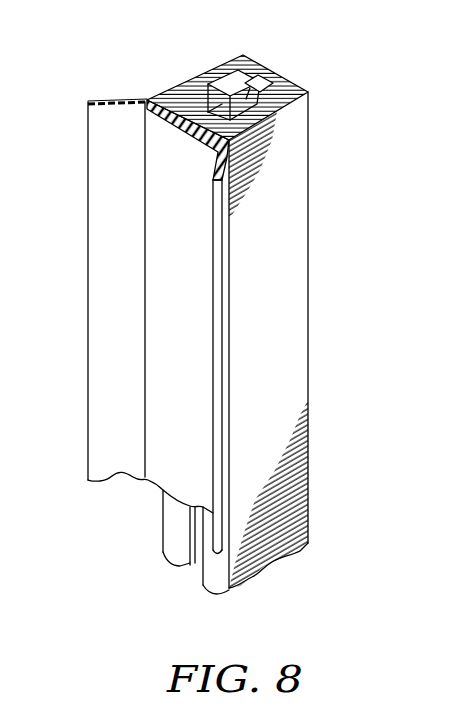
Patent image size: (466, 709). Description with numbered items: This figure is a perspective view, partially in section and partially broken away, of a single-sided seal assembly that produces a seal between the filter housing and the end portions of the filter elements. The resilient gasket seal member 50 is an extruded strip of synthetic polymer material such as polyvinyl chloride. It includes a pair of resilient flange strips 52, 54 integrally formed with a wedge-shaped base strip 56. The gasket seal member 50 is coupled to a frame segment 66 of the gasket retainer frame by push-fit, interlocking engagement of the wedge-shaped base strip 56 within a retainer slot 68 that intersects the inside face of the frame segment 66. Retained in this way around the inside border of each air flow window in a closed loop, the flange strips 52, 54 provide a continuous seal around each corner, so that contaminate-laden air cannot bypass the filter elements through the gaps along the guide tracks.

The resilient gasket seal member 50 is at (76, 165).
The resilient flange strip 52 is at (95, 224).
The resilient flange strip 54 is at (218, 277).
The wedge-shaped base strip 56 is at (213, 98).
The frame segment 66 is at (293, 343).
The retainer slot 68 is at (260, 87).